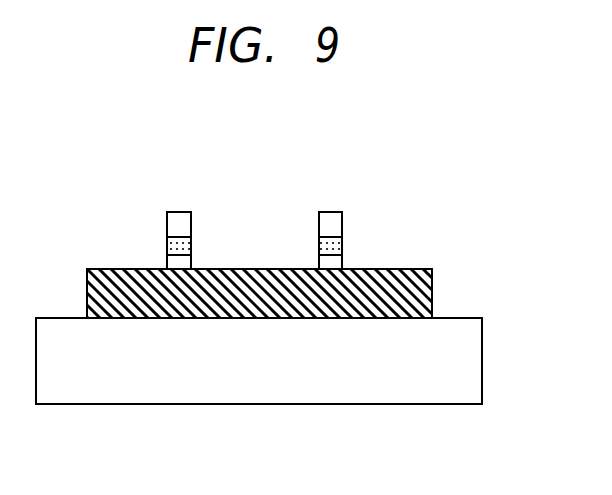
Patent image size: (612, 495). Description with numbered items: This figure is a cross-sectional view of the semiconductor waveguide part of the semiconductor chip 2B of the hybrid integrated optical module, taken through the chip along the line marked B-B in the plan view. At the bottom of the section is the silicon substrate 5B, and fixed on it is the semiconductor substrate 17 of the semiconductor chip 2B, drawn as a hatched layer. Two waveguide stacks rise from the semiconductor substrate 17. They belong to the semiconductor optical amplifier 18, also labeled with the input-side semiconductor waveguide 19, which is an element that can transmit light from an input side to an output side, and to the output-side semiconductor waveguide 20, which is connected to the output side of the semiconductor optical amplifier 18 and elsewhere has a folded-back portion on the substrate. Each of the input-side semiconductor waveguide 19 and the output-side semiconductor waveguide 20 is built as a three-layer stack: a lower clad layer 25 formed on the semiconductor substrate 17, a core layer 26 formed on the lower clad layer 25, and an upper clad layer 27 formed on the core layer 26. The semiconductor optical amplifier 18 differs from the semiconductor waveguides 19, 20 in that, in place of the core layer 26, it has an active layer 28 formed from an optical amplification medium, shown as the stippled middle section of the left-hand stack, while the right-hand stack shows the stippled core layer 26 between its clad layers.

The semiconductor chip 2B is at (302, 295).
The silicon substrate 5B is at (250, 395).
The semiconductor substrate 17 is at (425, 290).
The semiconductor optical amplifier (SOA) 18 is at (177, 190).
The input-side semiconductor waveguide 19 is at (176, 201).
The output-side semiconductor waveguide 20 is at (335, 200).
The lower clad layer 25 is at (172, 260).
The core layer 26 is at (341, 246).
The upper clad layer 27 is at (173, 218).
The active layer 28 is at (167, 241).